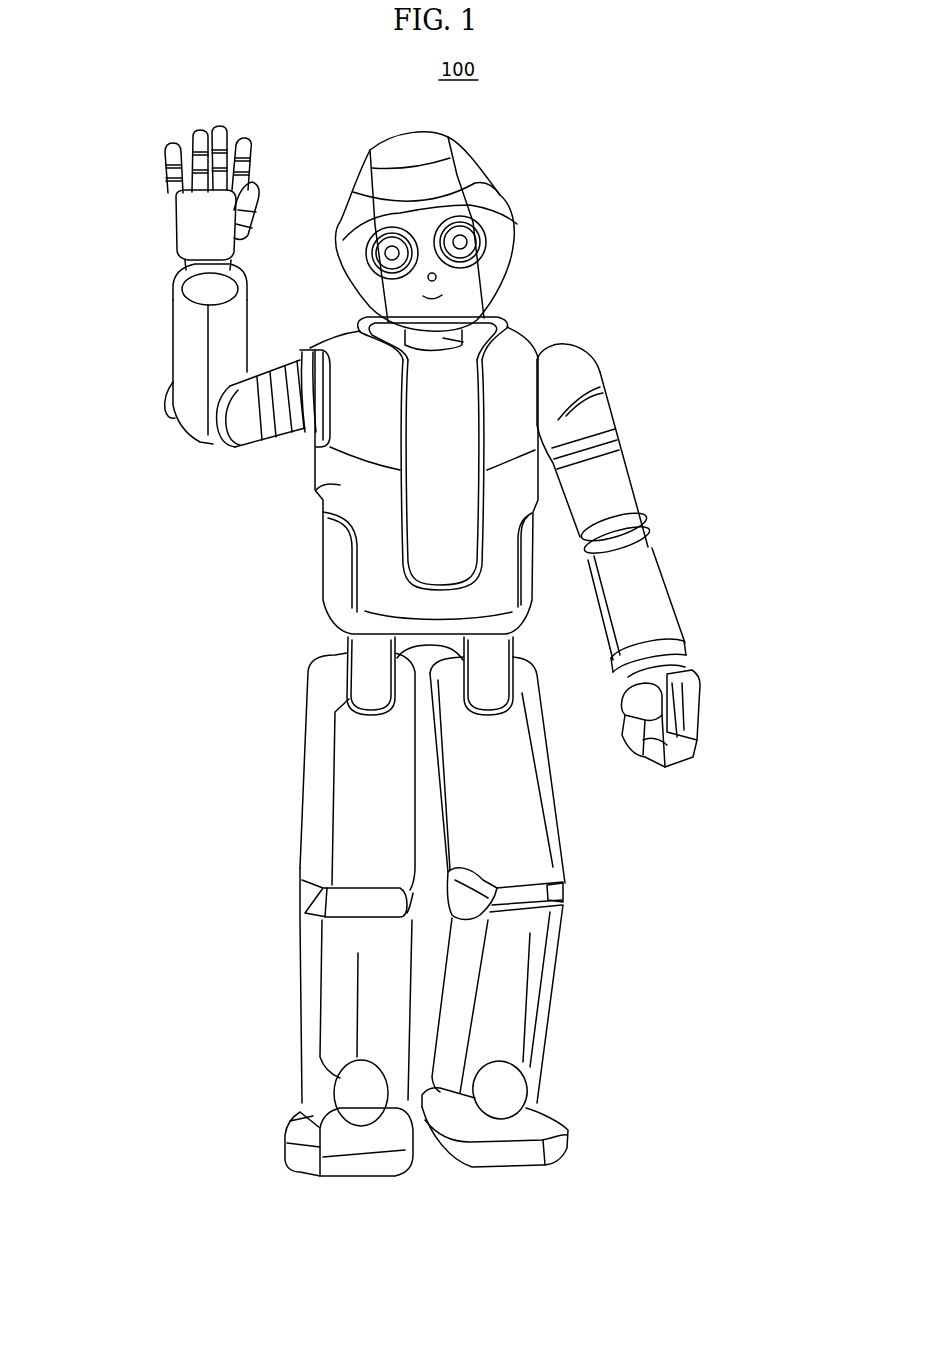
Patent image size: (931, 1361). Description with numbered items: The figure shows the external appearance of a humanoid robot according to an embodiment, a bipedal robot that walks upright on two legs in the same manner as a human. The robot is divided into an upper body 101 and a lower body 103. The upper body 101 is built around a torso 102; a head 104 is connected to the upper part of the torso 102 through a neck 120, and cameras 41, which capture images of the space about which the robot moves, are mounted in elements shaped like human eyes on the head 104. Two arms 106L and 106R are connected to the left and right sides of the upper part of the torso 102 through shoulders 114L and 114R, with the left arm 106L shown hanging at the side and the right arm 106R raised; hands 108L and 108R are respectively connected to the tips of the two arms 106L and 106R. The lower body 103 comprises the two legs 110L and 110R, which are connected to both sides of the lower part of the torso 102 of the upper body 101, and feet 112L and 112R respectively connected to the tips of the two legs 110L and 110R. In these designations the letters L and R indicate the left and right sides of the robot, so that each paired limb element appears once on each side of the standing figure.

The upper body 101 is at (674, 409).
The torso 102 is at (338, 483).
The lower body 103 is at (641, 899).
The head 104 is at (474, 231).
The cameras 41 is at (405, 233).
The neck 120 is at (438, 345).
The right shoulder 114R is at (298, 360).
The left shoulder 114L is at (548, 340).
The right arm 106R is at (183, 354).
The left arm 106L is at (638, 578).
The right hand 108R is at (183, 228).
The left hand 108L is at (690, 705).
The right leg 110R is at (306, 996).
The left leg 110L is at (548, 998).
The right foot 112R is at (306, 1121).
The left foot 112L is at (550, 1121).